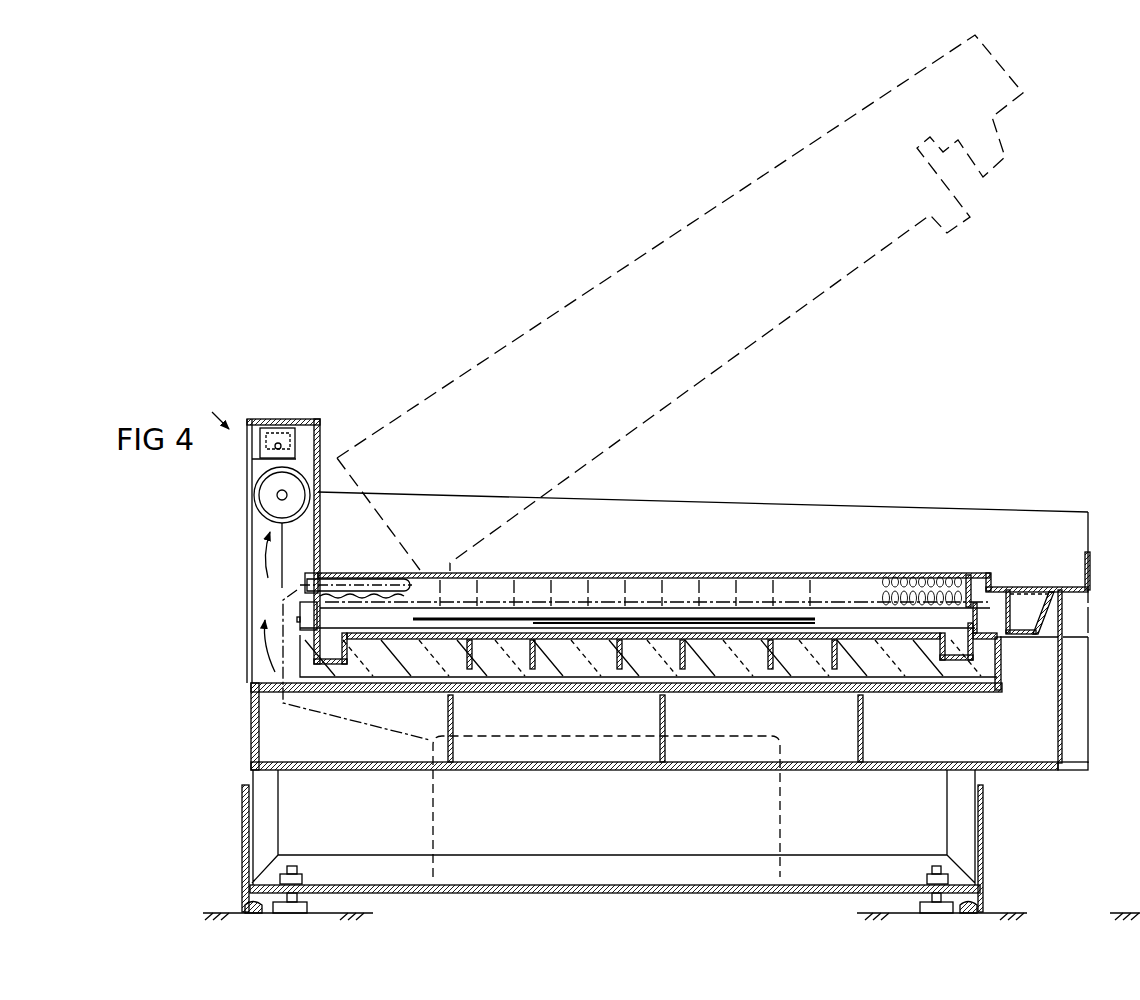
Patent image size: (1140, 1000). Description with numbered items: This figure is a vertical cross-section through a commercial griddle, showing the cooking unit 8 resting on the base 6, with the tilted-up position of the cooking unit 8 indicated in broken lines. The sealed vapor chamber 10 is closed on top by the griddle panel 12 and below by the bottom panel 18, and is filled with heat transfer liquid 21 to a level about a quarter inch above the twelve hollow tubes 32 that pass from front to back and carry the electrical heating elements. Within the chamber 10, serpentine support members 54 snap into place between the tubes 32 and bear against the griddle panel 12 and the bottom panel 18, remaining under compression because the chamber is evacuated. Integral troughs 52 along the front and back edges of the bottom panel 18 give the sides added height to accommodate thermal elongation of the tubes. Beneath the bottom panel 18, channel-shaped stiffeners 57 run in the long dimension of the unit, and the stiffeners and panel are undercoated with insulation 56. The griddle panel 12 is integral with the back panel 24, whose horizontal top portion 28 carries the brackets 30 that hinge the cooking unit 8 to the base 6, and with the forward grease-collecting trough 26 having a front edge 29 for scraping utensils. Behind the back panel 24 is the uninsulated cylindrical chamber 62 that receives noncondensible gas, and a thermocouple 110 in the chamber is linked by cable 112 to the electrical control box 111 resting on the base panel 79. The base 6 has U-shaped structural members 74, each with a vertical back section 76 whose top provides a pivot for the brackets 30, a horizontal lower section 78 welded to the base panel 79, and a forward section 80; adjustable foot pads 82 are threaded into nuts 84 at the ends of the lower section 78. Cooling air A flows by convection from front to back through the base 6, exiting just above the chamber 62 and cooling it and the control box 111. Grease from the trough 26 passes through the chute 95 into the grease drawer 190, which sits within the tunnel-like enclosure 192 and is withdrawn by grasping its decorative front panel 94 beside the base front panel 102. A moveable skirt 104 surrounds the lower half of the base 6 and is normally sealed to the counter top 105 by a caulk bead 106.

The base 6 is at (588, 897).
The cooking unit 8 is at (663, 222).
The sealed vapor chamber 10 is at (603, 583).
The griddle panel 12 is at (687, 572).
The bottom panel 18 is at (613, 639).
The heat transfer liquid 21 is at (527, 582).
The back panel 24 is at (320, 460).
The grease-collecting trough 26 is at (1071, 587).
The horizontal top portion 28 is at (319, 421).
The front edge 29 is at (1092, 570).
The brackets 30 is at (275, 430).
The hollow tubes 32 is at (840, 615).
The integral troughs 52 is at (345, 652).
The support members 54 is at (918, 577).
The insulation 56 is at (728, 668).
The channel-shaped stiffeners 57 is at (832, 650).
The cylindrical chamber 62 is at (255, 490).
The U-shaped structural members 74 is at (350, 852).
The vertical back section 76 is at (262, 661).
The horizontal lower section 78 is at (570, 862).
The base panel 79 is at (518, 887).
The forward section 80 is at (965, 808).
The adjustable foot pads 82 is at (920, 898).
The nuts 84 is at (928, 873).
The decorative front panel 94 is at (1090, 735).
The chute 95 is at (1040, 613).
The front panel 102 is at (1062, 615).
The moveable skirt 104 is at (243, 846).
The counter top 105 is at (250, 912).
The caulk bead 106 is at (245, 910).
The thermocouple 110 is at (362, 573).
The electrical control box 111 is at (781, 834).
The cable 112 is at (376, 729).
The grease drawer 190 is at (330, 762).
The tunnel-like enclosure 192 is at (535, 690).
The cooling air A is at (262, 468).